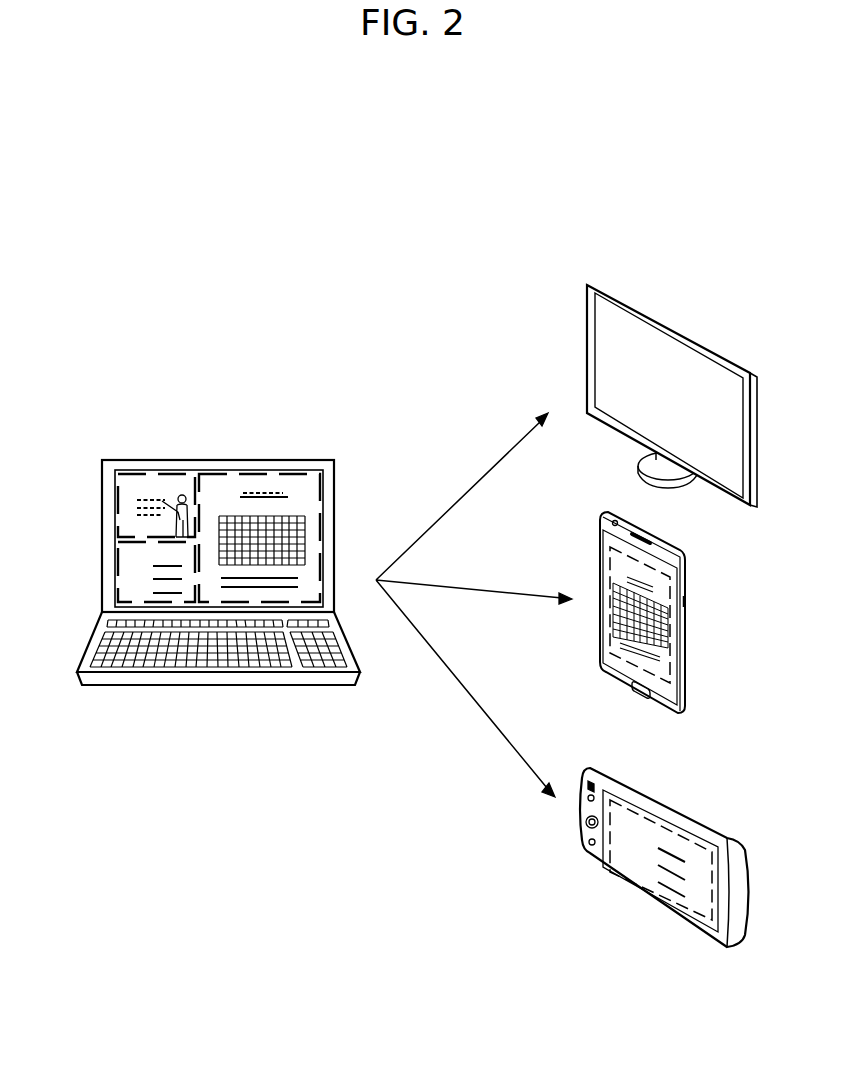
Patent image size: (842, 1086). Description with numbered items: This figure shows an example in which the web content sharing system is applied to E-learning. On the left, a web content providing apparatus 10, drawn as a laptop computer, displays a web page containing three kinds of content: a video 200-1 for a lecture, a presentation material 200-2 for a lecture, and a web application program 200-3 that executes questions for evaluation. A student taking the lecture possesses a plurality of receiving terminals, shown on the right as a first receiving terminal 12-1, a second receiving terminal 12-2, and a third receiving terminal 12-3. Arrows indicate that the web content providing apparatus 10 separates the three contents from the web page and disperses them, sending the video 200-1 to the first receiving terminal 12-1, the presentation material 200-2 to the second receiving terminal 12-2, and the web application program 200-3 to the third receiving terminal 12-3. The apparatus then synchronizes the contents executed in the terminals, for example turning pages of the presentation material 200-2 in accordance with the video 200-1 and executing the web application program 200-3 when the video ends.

The web content providing apparatus 10 is at (213, 460).
The video for a lecture 200-1 is at (117, 510).
The presentation material for a lecture 200-2 is at (323, 490).
The web application program 200-3 is at (117, 578).
The first receiving terminal 12-1 is at (718, 352).
The second receiving terminal 12-2 is at (685, 672).
The third receiving terminal 12-3 is at (715, 835).